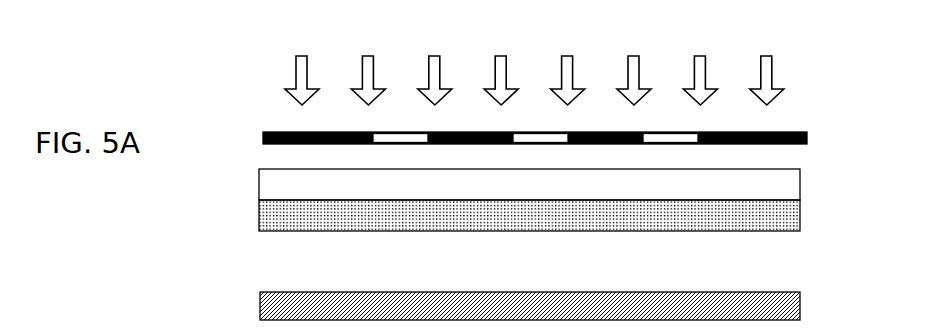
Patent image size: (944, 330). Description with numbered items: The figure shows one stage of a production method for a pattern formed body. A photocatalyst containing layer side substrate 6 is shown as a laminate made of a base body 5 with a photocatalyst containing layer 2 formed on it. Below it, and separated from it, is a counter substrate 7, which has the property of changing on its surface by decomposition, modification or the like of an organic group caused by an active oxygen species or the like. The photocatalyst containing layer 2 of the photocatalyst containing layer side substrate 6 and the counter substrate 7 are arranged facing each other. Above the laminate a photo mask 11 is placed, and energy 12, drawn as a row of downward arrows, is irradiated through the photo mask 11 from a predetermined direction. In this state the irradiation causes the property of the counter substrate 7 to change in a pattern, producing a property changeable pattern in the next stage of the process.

The energy 12 is at (767, 77).
The photo mask 11 is at (807, 137).
The photocatalyst containing layer side substrate 6 is at (585, 196).
The base body 5 is at (767, 186).
The photocatalyst containing layer 2 is at (768, 218).
The counter substrate 7 is at (767, 308).